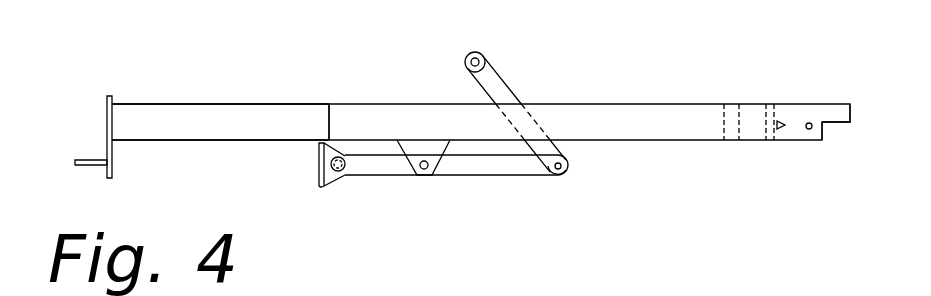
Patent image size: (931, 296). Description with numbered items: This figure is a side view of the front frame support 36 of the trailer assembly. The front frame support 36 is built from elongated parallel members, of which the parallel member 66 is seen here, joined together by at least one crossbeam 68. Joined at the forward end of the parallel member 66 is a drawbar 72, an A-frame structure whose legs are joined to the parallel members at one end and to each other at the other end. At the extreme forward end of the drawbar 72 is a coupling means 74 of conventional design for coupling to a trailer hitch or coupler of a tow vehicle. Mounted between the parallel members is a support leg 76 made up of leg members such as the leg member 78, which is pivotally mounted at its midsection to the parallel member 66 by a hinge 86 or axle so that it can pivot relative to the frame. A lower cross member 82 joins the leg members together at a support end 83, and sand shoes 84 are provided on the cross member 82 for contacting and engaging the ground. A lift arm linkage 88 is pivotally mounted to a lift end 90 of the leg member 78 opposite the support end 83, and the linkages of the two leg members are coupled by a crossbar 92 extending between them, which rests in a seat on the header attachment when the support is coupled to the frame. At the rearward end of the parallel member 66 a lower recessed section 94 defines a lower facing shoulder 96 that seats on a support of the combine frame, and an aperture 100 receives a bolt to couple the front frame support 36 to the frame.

The front frame support 36 is at (633, 78).
The parallel member 66 is at (653, 128).
The crossbeam 68 is at (738, 102).
The drawbar 72 is at (195, 78).
The coupling means 74 is at (113, 150).
The support leg 76 is at (473, 168).
The leg member 78 is at (517, 170).
The lower cross member 82 is at (345, 182).
The support end 83 is at (360, 163).
The sand shoes 84 is at (320, 163).
The hinge 86 is at (423, 172).
The lift arm linkage 88 is at (505, 85).
The lift end 90 is at (548, 174).
The crossbar 92 is at (478, 52).
The lower recessed section 94 is at (835, 135).
The lower facing shoulder 96 is at (845, 128).
The aperture 100 is at (808, 130).